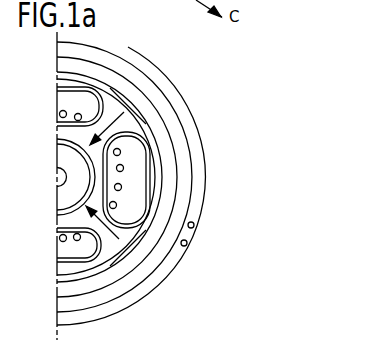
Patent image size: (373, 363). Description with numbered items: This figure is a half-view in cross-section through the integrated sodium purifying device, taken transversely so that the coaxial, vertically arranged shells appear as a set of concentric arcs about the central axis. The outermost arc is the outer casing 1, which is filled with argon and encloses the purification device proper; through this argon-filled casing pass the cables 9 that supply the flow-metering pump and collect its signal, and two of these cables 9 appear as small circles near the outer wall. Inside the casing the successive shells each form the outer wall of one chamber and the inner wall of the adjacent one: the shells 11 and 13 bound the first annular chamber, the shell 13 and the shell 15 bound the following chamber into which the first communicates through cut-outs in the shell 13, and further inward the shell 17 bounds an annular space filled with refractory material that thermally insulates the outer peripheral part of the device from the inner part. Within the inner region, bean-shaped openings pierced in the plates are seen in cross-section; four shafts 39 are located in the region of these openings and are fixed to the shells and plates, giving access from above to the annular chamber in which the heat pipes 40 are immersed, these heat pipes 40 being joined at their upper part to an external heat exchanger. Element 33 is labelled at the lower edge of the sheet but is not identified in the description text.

The outer casing 1 is at (206, 186).
The cables 9 is at (186, 241).
The shell 11 is at (193, 116).
The shell 13 is at (176, 100).
The shell 15 is at (150, 97).
The shell 17 is at (108, 118).
The element 33 is at (194, 357).
The shafts 39 is at (105, 250).
The heat pipes 40 is at (116, 204).